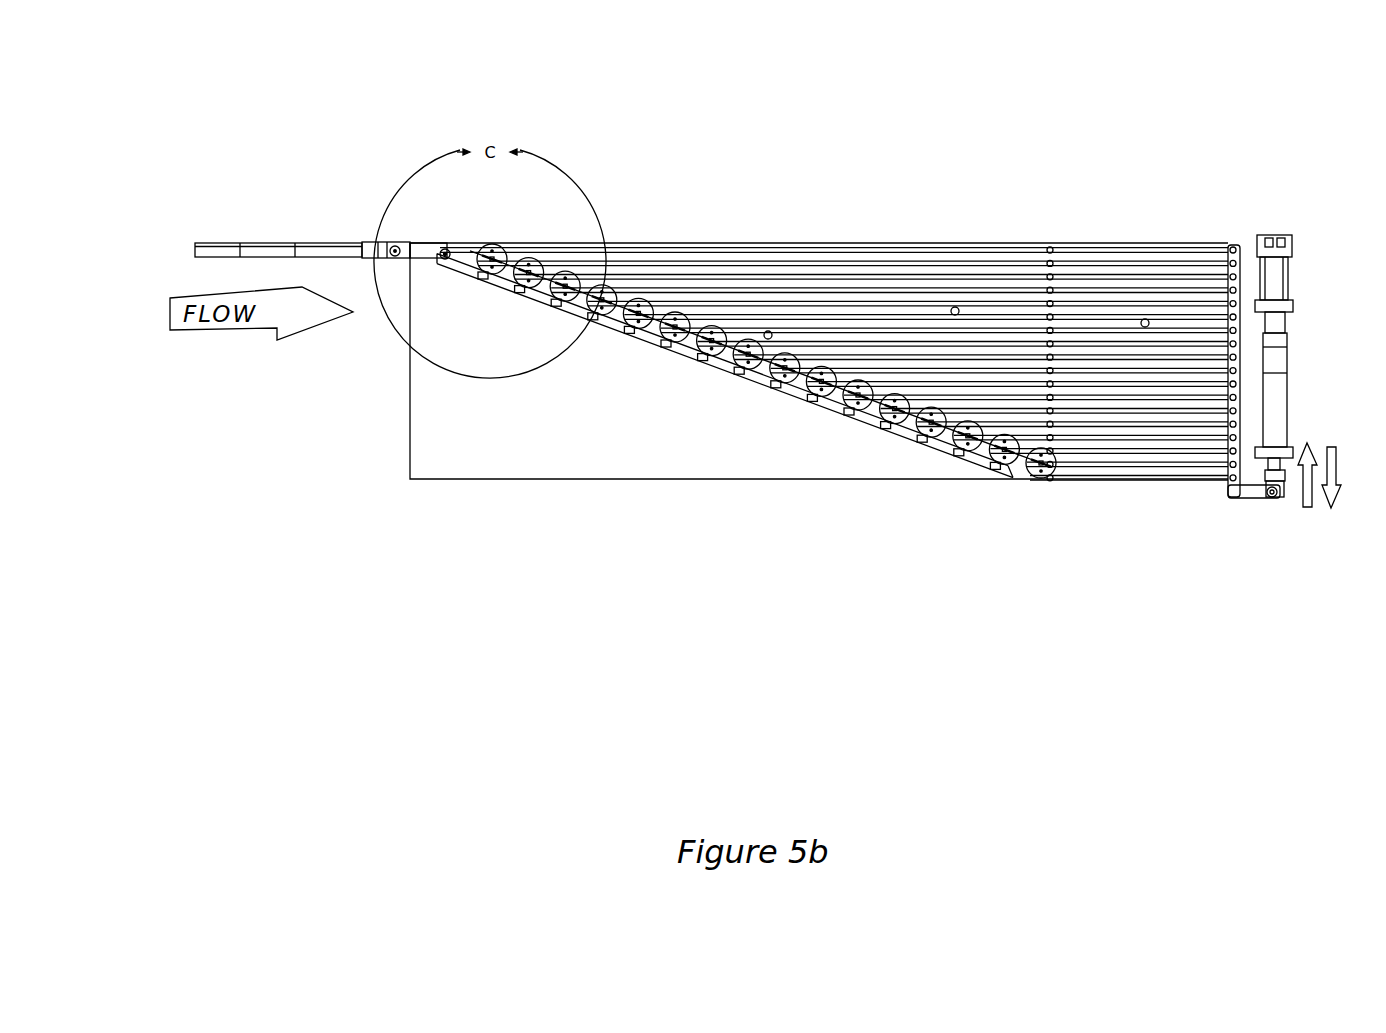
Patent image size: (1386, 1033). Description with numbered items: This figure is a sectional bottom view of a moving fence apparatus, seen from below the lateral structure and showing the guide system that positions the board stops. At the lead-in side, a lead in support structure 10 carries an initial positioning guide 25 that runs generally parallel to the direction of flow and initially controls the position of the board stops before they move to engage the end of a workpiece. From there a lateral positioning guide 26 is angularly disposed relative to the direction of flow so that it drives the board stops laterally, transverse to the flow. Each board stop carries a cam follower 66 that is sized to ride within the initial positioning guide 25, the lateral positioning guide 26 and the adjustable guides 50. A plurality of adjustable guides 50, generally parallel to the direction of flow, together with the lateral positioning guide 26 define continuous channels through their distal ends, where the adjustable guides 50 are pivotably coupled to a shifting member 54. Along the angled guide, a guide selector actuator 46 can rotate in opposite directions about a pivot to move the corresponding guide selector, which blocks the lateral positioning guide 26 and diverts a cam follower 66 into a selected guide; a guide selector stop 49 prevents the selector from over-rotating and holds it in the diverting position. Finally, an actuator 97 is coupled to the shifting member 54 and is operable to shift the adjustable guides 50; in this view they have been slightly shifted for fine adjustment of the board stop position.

The lead in support structure 10 is at (267, 241).
The initial positioning guide 25 is at (335, 248).
The cam follower 66 is at (392, 247).
The lateral positioning guide 26 is at (465, 257).
The shifting member 54 is at (1242, 245).
The guide selector stop 49 is at (845, 410).
The guide selector actuator 46 is at (1030, 475).
The adjustable guide 50 is at (1135, 470).
The actuator 97 is at (1272, 365).